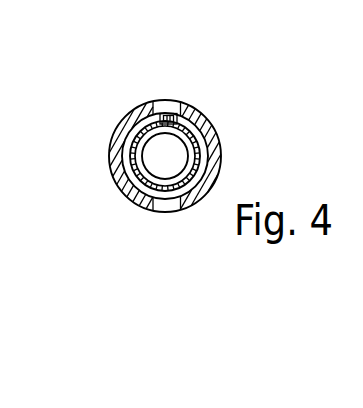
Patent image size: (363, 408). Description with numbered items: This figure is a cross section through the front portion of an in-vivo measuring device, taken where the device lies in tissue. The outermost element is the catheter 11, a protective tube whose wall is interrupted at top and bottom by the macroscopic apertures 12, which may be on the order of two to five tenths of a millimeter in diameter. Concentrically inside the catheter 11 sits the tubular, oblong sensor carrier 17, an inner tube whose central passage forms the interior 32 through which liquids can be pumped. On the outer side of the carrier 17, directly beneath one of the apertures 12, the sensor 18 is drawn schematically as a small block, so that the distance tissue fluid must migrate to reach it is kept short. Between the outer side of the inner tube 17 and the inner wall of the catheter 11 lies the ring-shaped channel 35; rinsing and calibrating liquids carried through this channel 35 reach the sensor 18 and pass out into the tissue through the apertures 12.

The catheter 11 is at (110, 158).
The apertures 12 is at (158, 98).
The sensor carrier 17 is at (190, 133).
The sensor 18 is at (176, 100).
The interior 32 is at (157, 152).
The ring-shaped channel 35 is at (189, 162).